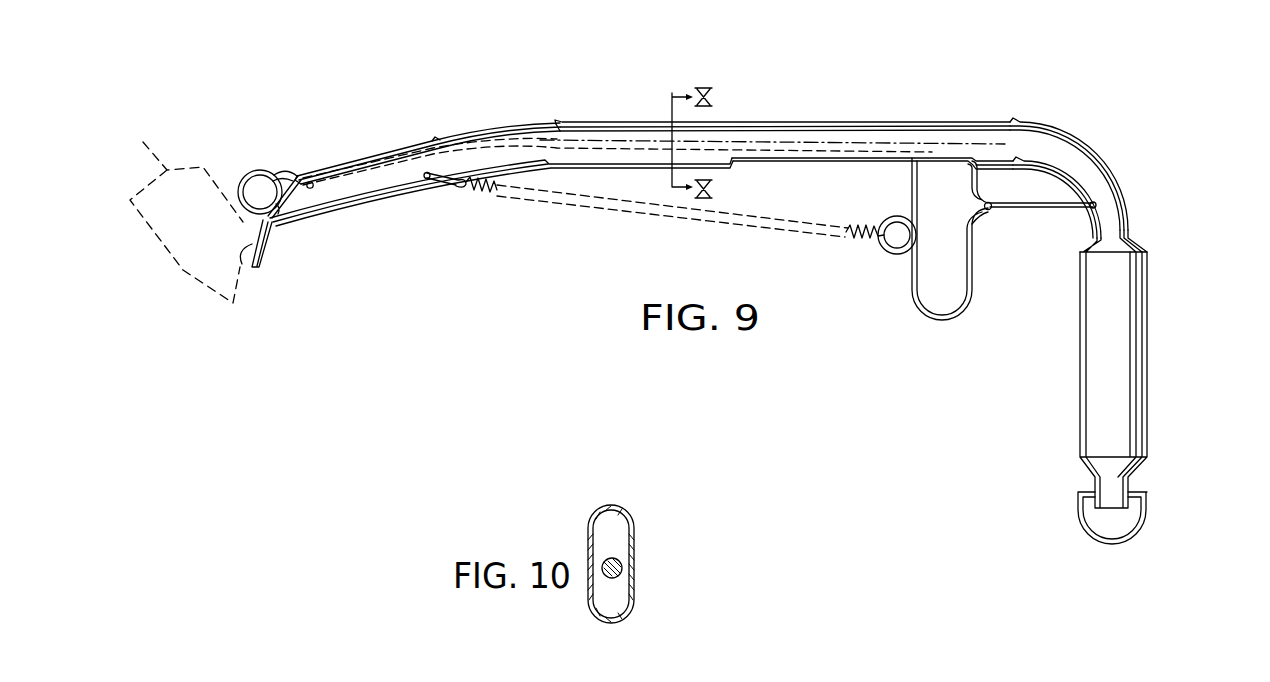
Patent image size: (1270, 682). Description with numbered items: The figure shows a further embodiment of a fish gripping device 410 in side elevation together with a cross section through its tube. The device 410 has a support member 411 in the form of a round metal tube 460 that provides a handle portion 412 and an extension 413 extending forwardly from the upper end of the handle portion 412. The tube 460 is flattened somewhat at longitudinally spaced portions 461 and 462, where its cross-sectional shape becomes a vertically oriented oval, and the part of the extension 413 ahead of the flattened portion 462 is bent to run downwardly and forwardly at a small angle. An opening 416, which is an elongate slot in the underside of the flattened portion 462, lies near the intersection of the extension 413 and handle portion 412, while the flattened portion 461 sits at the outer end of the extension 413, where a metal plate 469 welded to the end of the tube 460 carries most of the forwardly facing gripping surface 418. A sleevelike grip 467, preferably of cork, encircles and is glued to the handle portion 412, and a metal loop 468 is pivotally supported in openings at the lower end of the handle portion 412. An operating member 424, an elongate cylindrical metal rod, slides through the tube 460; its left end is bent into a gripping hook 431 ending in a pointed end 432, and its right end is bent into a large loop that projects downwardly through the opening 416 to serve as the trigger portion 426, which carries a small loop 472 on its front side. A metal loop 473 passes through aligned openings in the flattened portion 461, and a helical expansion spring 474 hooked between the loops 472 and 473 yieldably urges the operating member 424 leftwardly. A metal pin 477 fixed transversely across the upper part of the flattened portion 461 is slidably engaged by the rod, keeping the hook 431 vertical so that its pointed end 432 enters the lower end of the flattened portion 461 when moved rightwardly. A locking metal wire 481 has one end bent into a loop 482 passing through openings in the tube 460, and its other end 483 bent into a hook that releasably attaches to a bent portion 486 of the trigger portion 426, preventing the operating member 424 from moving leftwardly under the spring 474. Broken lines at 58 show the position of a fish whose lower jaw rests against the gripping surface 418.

In FIG. 9, the fish gripping device 410 is at (768, 66).
In FIG. 9, the support member 411 is at (794, 112).
In FIG. 9, the handle portion 412 is at (1118, 228).
In FIG. 9, the extension 413 is at (590, 131).
In FIG. 10, the extension 413 is at (617, 509).
In FIG. 9, the opening 416 is at (732, 162).
In FIG. 9, the gripping surface 418 is at (242, 267).
In FIG. 9, the operating member 424 is at (905, 166).
In FIG. 10, the operating member 424 is at (620, 570).
In FIG. 9, the trigger portion 426 is at (910, 290).
In FIG. 9, the gripping hook 431 is at (262, 167).
In FIG. 9, the pointed end 432 is at (264, 214).
In FIG. 9, the metal tube 460 is at (638, 113).
In FIG. 9, the flattened portion 461 is at (377, 145).
In FIG. 9, the flattened portion 462 is at (838, 113).
In FIG. 10, the flattened portion 462 is at (583, 507).
In FIG. 9, the sleevelike grip 467 is at (1113, 340).
In FIG. 9, the metal loop 468 is at (1130, 538).
In FIG. 9, the metal plate 469 is at (270, 242).
In FIG. 9, the small loop 472 is at (882, 248).
In FIG. 9, the metal loop 473 is at (430, 183).
In FIG. 9, the helical expansion spring 474 is at (490, 192).
In FIG. 9, the metal pin 477 is at (310, 181).
In FIG. 9, the metal wire 481 is at (1044, 204).
In FIG. 9, the loop 482 is at (1076, 208).
In FIG. 9, the other end 483 is at (995, 209).
In FIG. 9, the bent portion 486 is at (978, 222).
In FIG. 9, the fish position 58 is at (178, 216).